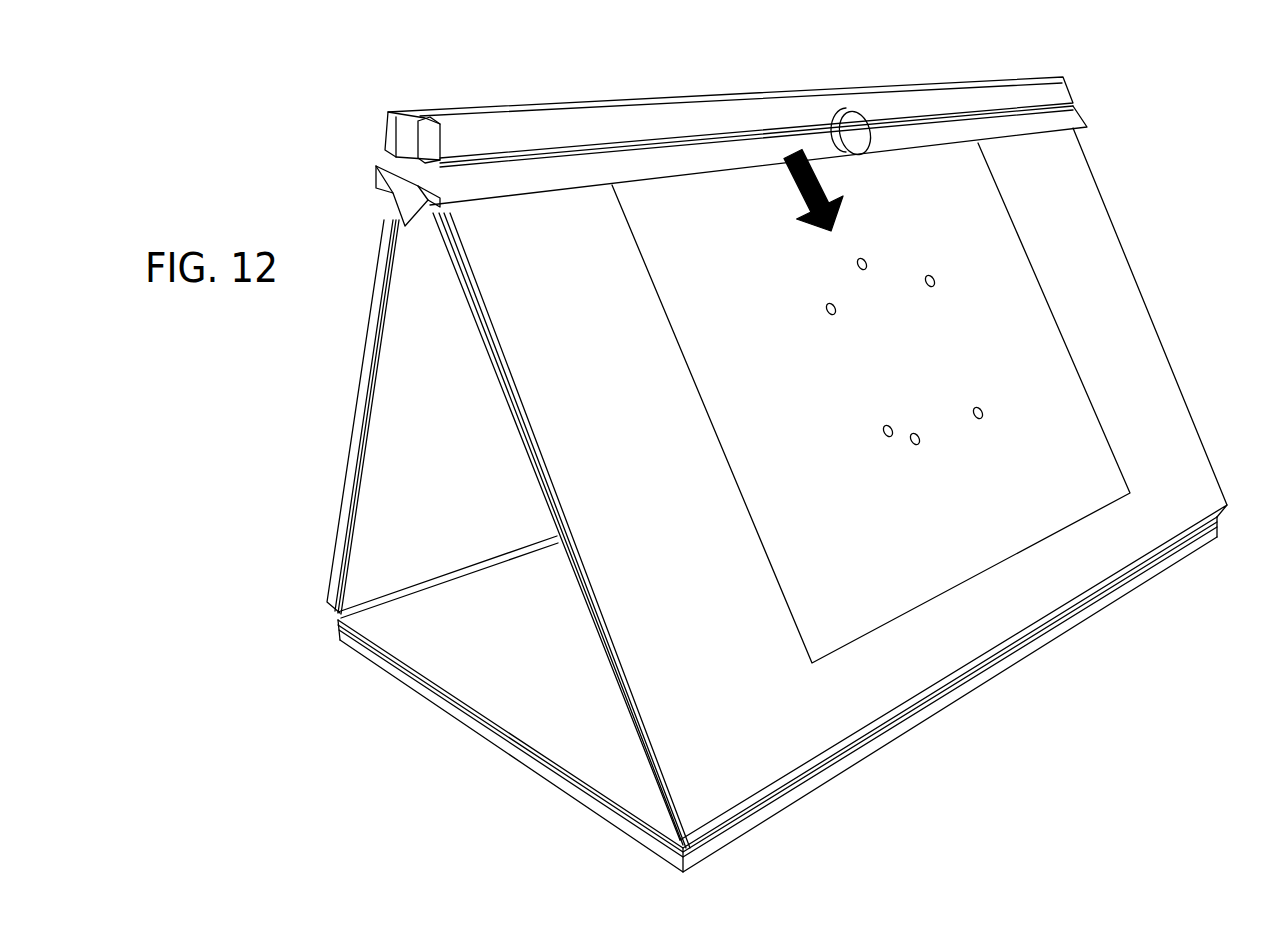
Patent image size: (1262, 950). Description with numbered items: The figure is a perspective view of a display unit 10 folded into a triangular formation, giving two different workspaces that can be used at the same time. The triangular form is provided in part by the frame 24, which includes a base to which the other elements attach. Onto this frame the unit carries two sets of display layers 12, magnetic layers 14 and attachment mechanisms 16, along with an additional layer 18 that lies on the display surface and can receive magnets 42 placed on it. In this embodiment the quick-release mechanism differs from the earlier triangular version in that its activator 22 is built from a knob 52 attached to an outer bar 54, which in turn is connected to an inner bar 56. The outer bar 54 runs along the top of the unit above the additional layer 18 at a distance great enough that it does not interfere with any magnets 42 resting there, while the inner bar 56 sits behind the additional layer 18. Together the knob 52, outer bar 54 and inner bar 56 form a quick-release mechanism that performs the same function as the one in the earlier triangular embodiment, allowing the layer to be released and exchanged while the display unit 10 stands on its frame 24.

The display unit 10 is at (760, 451).
The display layer 12 is at (830, 488).
The magnetic layer 14 is at (405, 380).
The attachment mechanism 16 is at (983, 76).
The additional layer 18 is at (1047, 350).
The activator 22 is at (1073, 117).
The frame 24 is at (466, 715).
The magnet 42 is at (982, 416).
The knob 52 is at (843, 122).
The outer bar 54 is at (680, 152).
The inner bar 56 is at (400, 212).